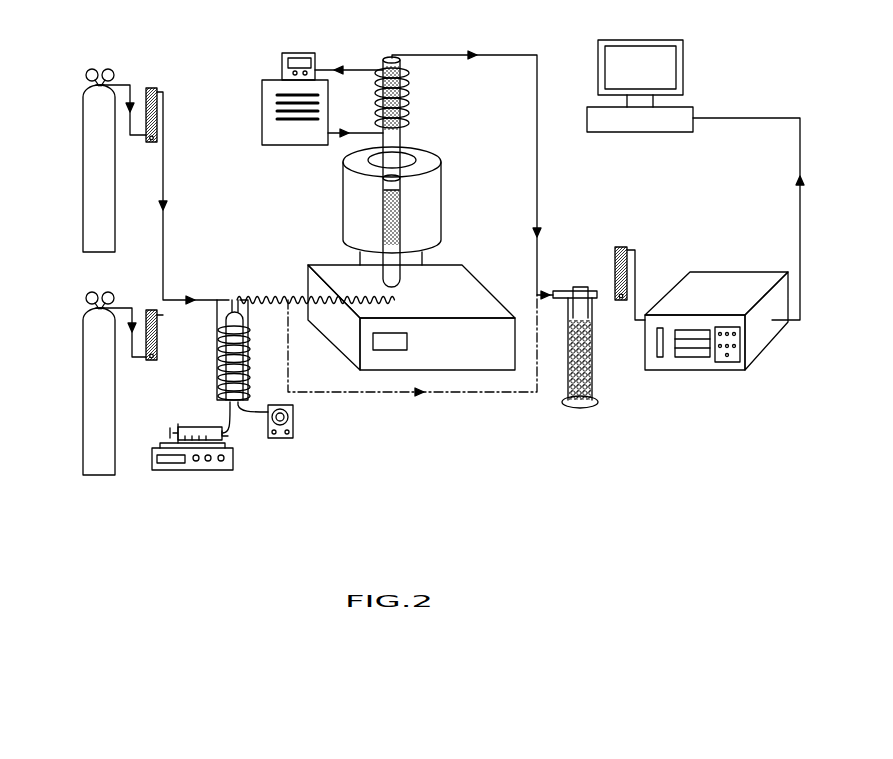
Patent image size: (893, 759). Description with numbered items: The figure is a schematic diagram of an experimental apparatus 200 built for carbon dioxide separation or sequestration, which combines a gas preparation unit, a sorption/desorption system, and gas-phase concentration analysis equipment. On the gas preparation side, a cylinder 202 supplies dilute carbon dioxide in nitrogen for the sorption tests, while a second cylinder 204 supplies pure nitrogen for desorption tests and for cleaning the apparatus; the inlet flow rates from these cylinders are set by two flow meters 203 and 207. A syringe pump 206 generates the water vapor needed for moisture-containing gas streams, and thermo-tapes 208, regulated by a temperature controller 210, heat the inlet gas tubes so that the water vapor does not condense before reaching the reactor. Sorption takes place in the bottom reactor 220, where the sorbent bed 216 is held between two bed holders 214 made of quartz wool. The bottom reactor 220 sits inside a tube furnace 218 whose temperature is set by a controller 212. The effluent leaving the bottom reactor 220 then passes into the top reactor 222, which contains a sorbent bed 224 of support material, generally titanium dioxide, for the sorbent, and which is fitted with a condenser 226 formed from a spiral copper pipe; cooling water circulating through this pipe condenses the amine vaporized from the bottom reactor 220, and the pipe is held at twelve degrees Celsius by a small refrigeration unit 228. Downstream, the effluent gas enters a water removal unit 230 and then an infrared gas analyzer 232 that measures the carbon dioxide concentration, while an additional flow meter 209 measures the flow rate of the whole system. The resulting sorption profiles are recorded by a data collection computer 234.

The apparatus 200 is at (80, 57).
The cylinder 202 is at (98, 209).
The flow meter 203 is at (160, 88).
The cylinder 204 is at (98, 444).
The syringe pump 206 is at (233, 466).
The flow meter 207 is at (146, 310).
The thermo-tapes 208 is at (300, 296).
The flow meter 209 is at (615, 262).
The temperature controller 210 is at (293, 426).
The controller 212 is at (482, 356).
The bed holders 214 is at (383, 242).
The sorbent bed 216 is at (400, 218).
The tube furnace 218 is at (441, 191).
The bottom reactor 220 is at (400, 195).
The top reactor 222 is at (410, 118).
The sorbent bed 224 is at (409, 97).
The condenser 226 is at (409, 73).
The refrigeration unit 228 is at (266, 80).
The water removal unit 230 is at (590, 410).
The infrared gas analyzer 232 is at (707, 371).
The data collection computer 234 is at (683, 88).